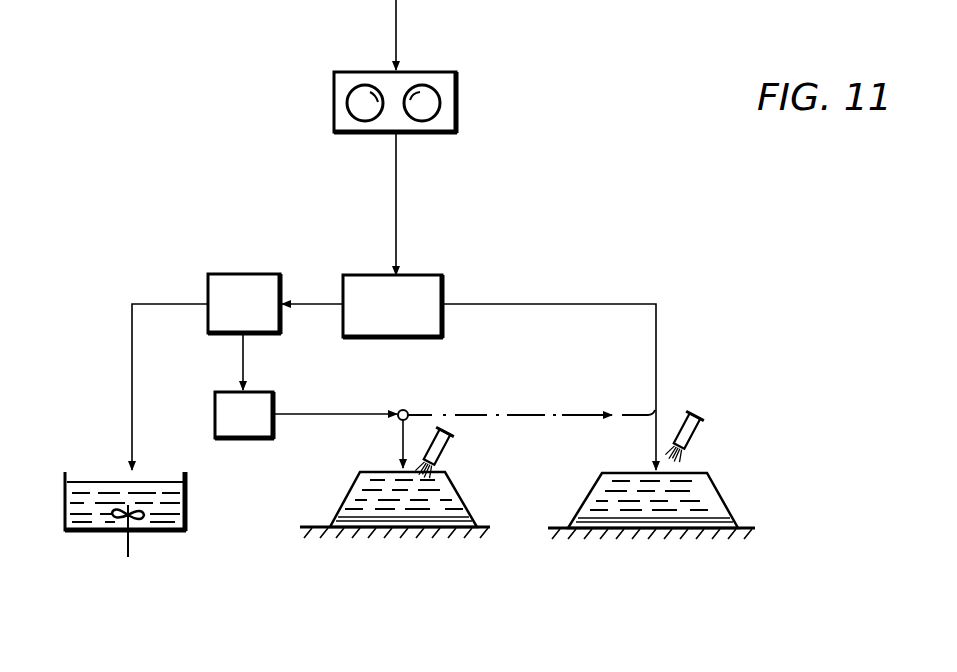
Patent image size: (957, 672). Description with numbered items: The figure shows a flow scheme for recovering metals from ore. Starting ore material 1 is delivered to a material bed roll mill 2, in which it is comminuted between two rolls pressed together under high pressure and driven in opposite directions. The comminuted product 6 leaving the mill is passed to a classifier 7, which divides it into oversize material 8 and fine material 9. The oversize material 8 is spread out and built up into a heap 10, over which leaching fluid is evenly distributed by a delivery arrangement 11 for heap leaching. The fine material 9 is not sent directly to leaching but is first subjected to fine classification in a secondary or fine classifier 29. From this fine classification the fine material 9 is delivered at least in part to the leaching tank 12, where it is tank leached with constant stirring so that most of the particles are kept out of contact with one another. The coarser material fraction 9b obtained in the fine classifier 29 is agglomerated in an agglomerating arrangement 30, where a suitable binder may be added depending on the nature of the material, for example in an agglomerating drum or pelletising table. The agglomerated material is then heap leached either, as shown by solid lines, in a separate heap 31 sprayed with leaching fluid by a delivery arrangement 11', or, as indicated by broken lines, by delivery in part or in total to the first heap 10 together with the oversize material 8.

The starting ore material 1 is at (397, 20).
The material bed roll mill 2 is at (462, 79).
The comminuted product 6 is at (397, 190).
The classifier 7 is at (423, 273).
The oversize material 8 is at (654, 363).
The fine material 9 is at (309, 302).
The coarser material fraction 9b is at (244, 362).
The heap 10 is at (731, 506).
The delivery arrangement 11 is at (712, 438).
The delivery arrangement 11' is at (467, 454).
The leaching tank 12 is at (190, 498).
The fine classifier 29 is at (240, 272).
The agglomerating arrangement 30 is at (277, 398).
The separate heap 31 is at (469, 506).